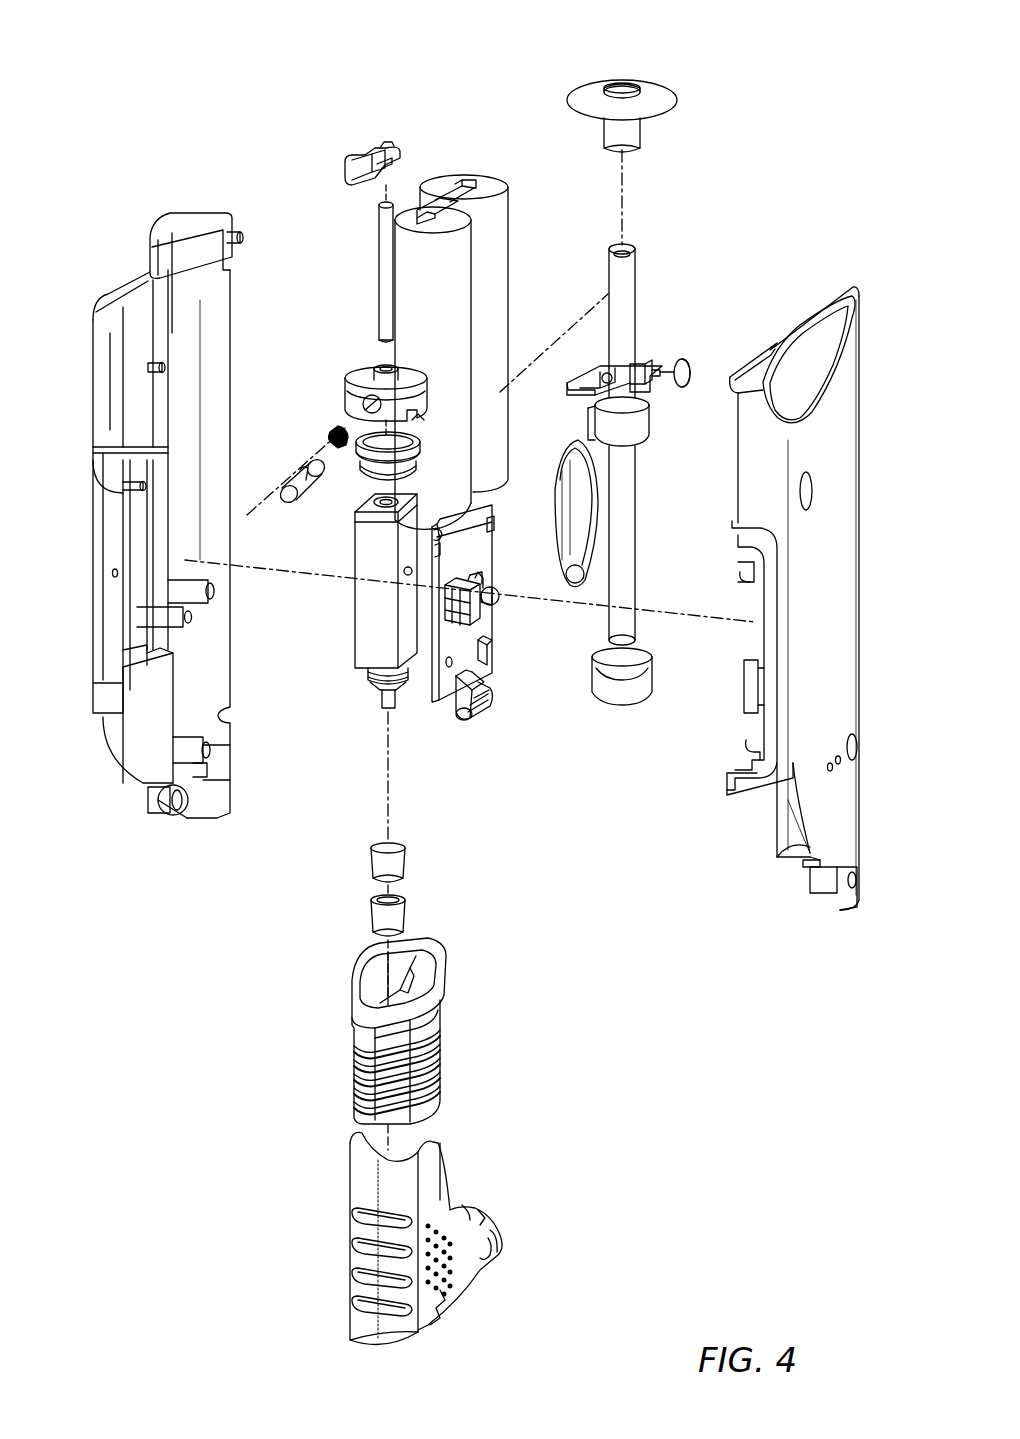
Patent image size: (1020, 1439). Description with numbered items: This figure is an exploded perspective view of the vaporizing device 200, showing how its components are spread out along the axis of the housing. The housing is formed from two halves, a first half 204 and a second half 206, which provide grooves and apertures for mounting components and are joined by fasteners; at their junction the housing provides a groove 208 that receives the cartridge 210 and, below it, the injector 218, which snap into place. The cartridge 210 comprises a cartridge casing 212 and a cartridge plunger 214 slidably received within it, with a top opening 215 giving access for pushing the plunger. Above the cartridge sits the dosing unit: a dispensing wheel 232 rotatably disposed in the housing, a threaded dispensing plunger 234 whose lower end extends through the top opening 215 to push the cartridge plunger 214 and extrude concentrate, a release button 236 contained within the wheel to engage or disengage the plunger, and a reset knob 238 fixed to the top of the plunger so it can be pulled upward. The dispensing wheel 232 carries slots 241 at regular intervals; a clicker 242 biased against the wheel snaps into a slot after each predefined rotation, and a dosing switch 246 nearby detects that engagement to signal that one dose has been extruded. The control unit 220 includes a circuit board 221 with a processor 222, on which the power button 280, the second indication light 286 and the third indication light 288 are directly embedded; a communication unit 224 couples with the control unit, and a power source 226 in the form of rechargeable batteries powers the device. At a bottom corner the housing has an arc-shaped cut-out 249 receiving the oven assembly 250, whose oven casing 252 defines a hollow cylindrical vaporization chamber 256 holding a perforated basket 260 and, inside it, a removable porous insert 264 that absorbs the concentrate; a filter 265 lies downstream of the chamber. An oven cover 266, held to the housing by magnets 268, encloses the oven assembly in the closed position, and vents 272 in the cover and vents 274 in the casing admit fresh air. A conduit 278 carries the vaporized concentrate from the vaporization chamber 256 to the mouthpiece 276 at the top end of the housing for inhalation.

The vaporizing device 200 is at (752, 66).
The first half 204 is at (828, 310).
The second half 206 is at (178, 235).
The groove 208 is at (742, 522).
The cartridge 210 is at (348, 647).
The cartridge casing 212 is at (360, 590).
The cartridge plunger 214 is at (365, 460).
The top opening 215 is at (372, 518).
The injector 218 is at (380, 698).
The control unit 220 is at (487, 726).
The circuit board 221 is at (436, 683).
The processor 222 is at (486, 668).
The communication unit 224 is at (508, 520).
The power source 226 is at (500, 228).
The dispensing wheel 232 is at (358, 370).
The dispensing plunger 234 is at (380, 247).
The release button 236 is at (292, 460).
The reset knob 238 is at (345, 173).
The slots 241 is at (425, 421).
The clicker 242 is at (638, 432).
The dosing switch 246 is at (592, 370).
The cut-out 249 is at (800, 838).
The oven assembly 250 is at (325, 971).
The oven casing 252 is at (440, 1041).
The vaporization chamber 256 is at (372, 974).
The basket 260 is at (405, 908).
The porous insert 264 is at (368, 854).
The filter 265 is at (635, 690).
The oven cover 266 is at (432, 1170).
The magnets 268 is at (160, 805).
The vents 272 is at (350, 1248).
The vents 274 is at (444, 1087).
The mouthpiece 276 is at (648, 100).
The conduit 278 is at (645, 618).
The power button 280 is at (494, 596).
The second indication light 286 is at (484, 610).
The third indication light 288 is at (480, 628).